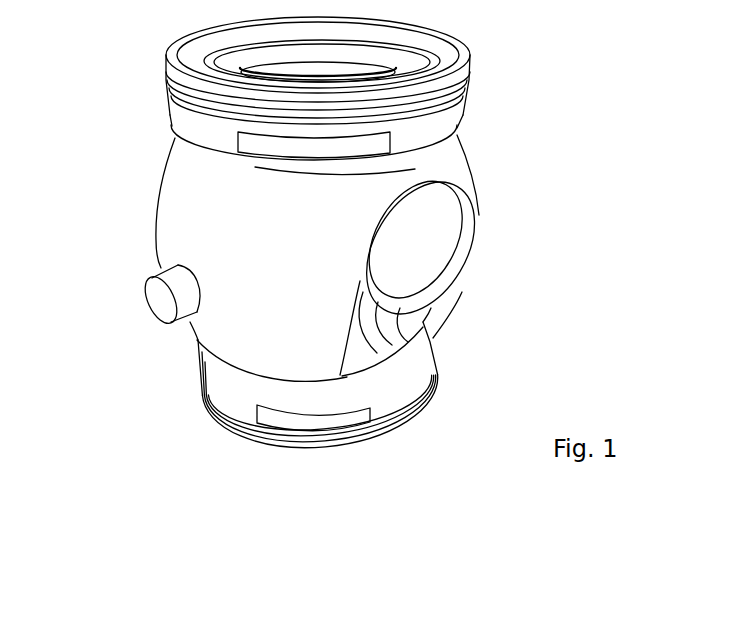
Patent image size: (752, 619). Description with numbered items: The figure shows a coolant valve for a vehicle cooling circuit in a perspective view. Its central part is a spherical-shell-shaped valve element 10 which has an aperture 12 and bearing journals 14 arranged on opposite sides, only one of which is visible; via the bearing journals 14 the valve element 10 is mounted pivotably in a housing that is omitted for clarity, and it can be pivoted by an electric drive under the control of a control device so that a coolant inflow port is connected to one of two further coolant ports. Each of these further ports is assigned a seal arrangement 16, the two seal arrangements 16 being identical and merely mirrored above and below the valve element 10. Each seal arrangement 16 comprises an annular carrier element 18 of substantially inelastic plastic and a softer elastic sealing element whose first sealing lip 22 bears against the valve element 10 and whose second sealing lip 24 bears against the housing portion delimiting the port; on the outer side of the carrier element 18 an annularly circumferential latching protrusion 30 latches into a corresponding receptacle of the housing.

The valve element 10 is at (170, 213).
The aperture 12 is at (462, 255).
The bearing journals 14 is at (160, 298).
The seal arrangement 16 is at (495, 52).
The carrier element 18 is at (447, 130).
The first sealing lip 22 is at (377, 353).
The second sealing lip 24 is at (178, 55).
The latching protrusion 30 is at (473, 91).